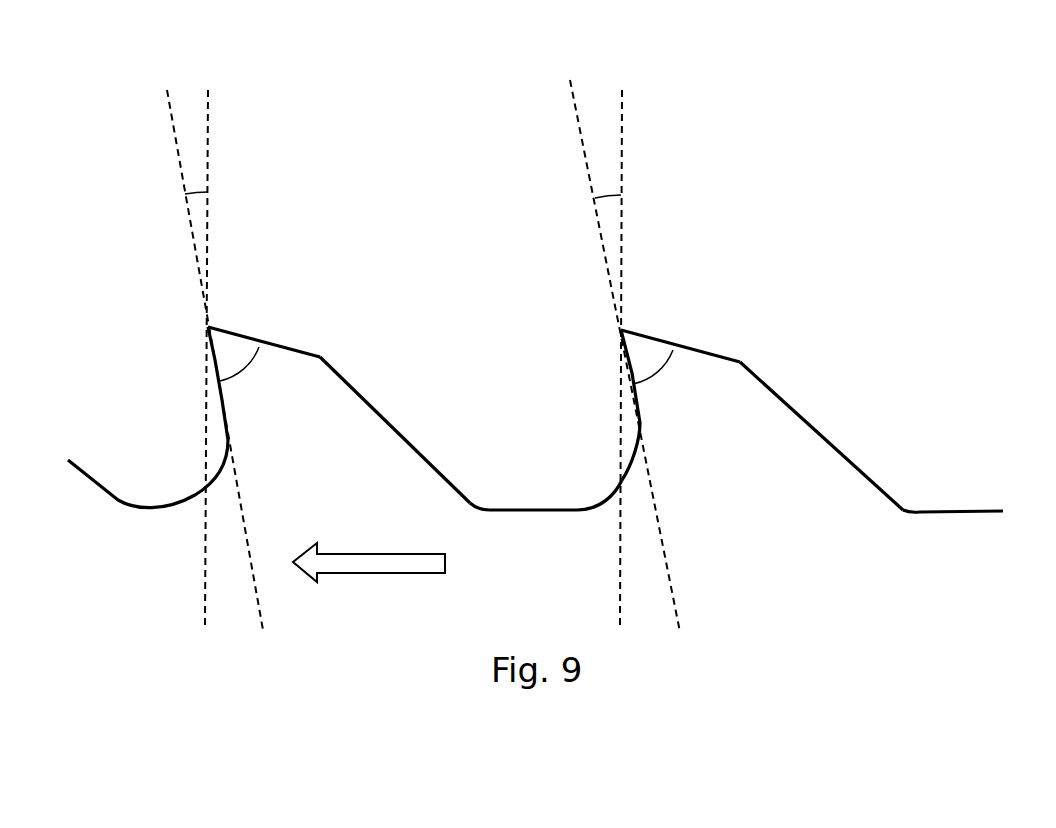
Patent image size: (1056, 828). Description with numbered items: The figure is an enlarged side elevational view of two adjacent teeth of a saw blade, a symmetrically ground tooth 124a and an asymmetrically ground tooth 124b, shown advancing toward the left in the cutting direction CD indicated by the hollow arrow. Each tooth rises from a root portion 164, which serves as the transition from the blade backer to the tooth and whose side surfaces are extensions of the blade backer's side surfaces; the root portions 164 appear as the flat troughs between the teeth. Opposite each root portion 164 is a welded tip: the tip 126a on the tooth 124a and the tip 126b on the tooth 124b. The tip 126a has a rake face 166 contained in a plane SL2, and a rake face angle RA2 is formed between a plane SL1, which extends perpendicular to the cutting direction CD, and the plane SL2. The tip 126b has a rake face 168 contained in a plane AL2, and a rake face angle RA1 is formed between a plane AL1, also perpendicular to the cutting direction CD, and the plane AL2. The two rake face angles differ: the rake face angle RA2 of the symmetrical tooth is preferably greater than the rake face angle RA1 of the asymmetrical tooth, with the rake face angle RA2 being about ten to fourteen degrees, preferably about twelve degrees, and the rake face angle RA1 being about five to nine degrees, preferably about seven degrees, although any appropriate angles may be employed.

The tooth 124a is at (328, 435).
The tooth 124b is at (732, 425).
The tip 126a is at (220, 327).
The tip 126b is at (648, 333).
The root portion 164 is at (366, 494).
The rake face 166 is at (218, 370).
The rake face 168 is at (630, 373).
The cutting direction CD is at (382, 573).
The plane SL1 is at (223, 341).
The plane SL2 is at (192, 343).
The plane AL1 is at (637, 341).
The plane AL2 is at (615, 344).
The rake face angle RA1 is at (605, 190).
The rake face angle RA2 is at (196, 188).